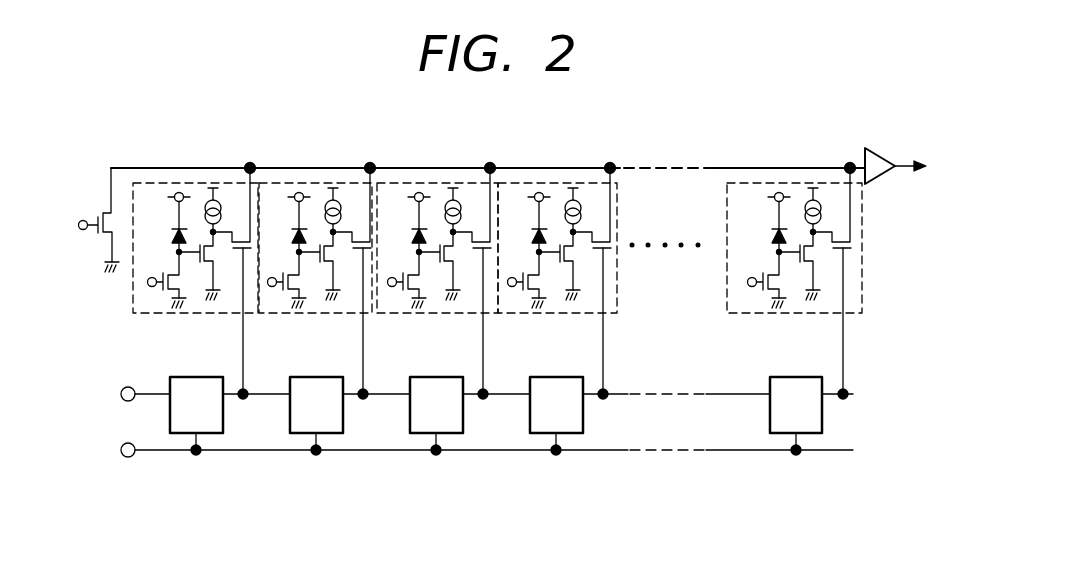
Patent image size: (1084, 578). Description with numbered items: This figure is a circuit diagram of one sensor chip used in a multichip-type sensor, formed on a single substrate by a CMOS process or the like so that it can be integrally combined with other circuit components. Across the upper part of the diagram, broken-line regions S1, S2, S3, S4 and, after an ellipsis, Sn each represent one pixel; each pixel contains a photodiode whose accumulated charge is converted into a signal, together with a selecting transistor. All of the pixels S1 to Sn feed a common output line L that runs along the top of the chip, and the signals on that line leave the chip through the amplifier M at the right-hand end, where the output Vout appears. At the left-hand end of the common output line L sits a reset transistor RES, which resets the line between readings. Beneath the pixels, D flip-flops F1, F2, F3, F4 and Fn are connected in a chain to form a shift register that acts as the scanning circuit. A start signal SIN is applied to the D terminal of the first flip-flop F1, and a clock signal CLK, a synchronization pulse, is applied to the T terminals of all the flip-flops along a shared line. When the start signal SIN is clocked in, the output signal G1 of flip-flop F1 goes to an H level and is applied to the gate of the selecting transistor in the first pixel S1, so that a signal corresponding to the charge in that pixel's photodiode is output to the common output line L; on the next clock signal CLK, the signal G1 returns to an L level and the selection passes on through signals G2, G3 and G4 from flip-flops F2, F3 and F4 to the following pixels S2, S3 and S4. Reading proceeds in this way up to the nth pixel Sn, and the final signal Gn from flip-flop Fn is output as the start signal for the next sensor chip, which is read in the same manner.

The first pixel S1 is at (180, 183).
The second pixel S2 is at (310, 182).
The third pixel S3 is at (420, 182).
The fourth pixel S4 is at (555, 180).
The nth pixel Sn is at (762, 178).
The common output line L is at (505, 168).
The amplifier M is at (880, 148).
The first D flip-flop F1 is at (185, 377).
The second D flip-flop F2 is at (305, 377).
The third D flip-flop F3 is at (425, 377).
The fourth D flip-flop F4 is at (545, 377).
The nth D flip-flop Fn is at (785, 377).
The signal from the first D flip-flop G1 is at (227, 323).
The signal from the second D flip-flop G2 is at (347, 323).
The signal from the third D flip-flop G3 is at (467, 323).
The signal from the fourth D flip-flop G4 is at (587, 323).
The signal from the nth D flip-flop Gn is at (827, 323).
The reset transistor RES is at (87, 220).
The start signal SIN is at (462, 396).
The clock signal CLK is at (462, 452).
The output signal Vout is at (923, 152).